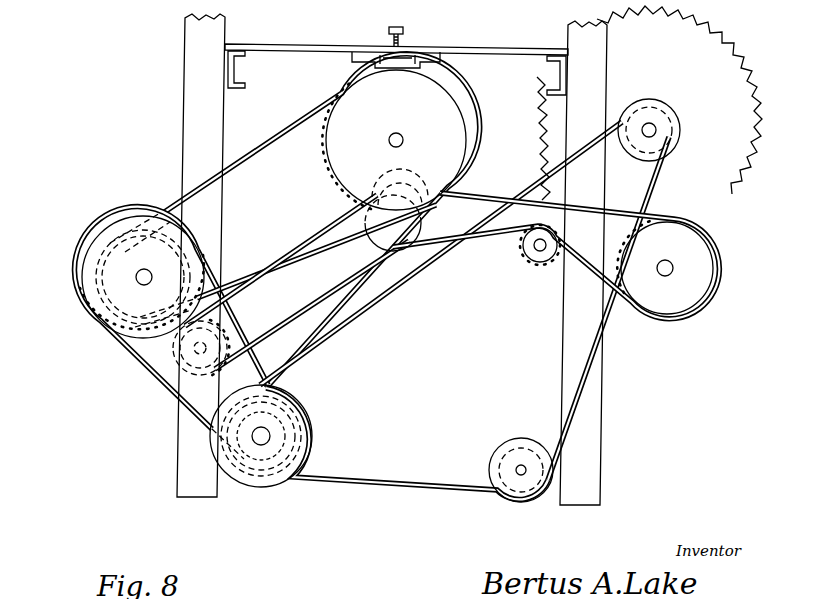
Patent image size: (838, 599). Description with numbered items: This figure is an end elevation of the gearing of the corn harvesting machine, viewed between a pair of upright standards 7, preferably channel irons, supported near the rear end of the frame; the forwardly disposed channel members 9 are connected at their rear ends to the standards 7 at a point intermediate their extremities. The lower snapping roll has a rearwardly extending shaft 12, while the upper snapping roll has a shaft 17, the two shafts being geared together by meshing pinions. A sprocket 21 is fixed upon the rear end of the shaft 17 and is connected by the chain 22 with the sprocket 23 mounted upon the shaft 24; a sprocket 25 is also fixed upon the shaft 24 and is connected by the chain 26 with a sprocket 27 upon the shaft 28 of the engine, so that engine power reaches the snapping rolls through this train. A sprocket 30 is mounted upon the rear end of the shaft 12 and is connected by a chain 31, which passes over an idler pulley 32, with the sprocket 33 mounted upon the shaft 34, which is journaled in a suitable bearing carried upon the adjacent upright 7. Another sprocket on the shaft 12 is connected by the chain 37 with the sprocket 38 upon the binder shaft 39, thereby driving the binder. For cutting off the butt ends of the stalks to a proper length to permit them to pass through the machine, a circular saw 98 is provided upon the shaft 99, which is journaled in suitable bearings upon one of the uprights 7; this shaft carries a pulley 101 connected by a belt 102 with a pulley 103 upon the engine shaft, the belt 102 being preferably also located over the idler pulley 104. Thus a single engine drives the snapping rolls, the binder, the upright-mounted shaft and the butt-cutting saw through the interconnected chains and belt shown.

The standards 7 is at (218, 121).
The channel members 9 is at (232, 66).
The shaft 12 is at (368, 205).
The shaft 17 is at (403, 139).
The sprocket 21 is at (340, 148).
The chain 22 is at (287, 129).
The sprocket 23 is at (152, 212).
The shaft 24 is at (149, 273).
The sprocket 25 is at (90, 268).
The chain 26 is at (196, 412).
The sprocket 27 is at (286, 408).
The shaft 28 is at (259, 444).
The sprocket 30 is at (418, 223).
The chain 31 is at (502, 199).
The idler pulley 32 is at (528, 254).
The sprocket 33 is at (704, 252).
The shaft 34 is at (671, 270).
The chain 37 is at (320, 240).
The sprocket 38 is at (176, 351).
The binder shaft 39 is at (216, 344).
The circular saw 98 is at (679, 100).
The shaft 99 is at (652, 128).
The pulley 101 is at (678, 137).
The belt 102 is at (655, 196).
The pulley 103 is at (305, 438).
The idler pulley 104 is at (521, 479).